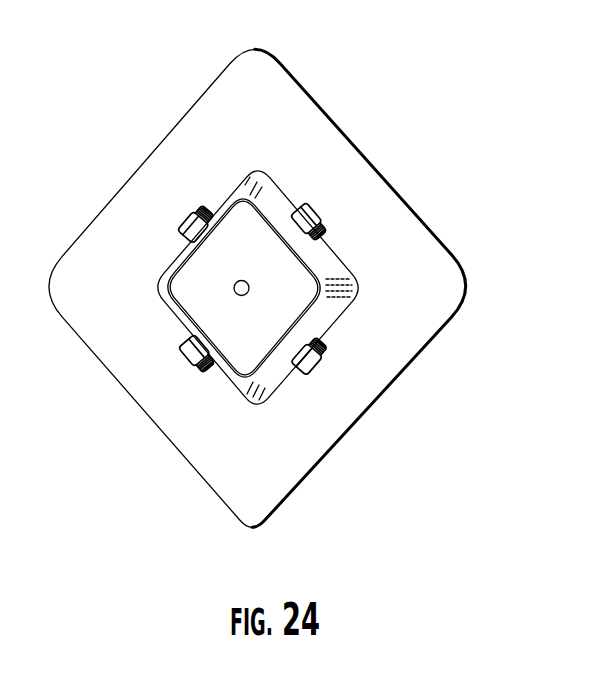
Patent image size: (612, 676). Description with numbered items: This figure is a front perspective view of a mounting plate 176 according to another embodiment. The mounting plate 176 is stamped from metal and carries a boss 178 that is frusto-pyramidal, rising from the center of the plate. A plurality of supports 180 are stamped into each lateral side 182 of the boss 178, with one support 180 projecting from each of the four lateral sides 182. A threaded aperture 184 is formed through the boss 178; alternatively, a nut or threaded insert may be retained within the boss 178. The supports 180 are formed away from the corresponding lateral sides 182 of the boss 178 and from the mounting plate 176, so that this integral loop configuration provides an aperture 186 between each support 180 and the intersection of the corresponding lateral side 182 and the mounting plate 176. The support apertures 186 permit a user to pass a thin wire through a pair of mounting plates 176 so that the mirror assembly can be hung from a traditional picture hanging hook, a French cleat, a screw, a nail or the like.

The mounting plate 176 is at (353, 139).
The boss 178 is at (165, 271).
The supports 180 is at (171, 134).
The lateral side 182 is at (320, 250).
The threaded aperture 184 is at (256, 279).
The aperture 186 is at (205, 218).